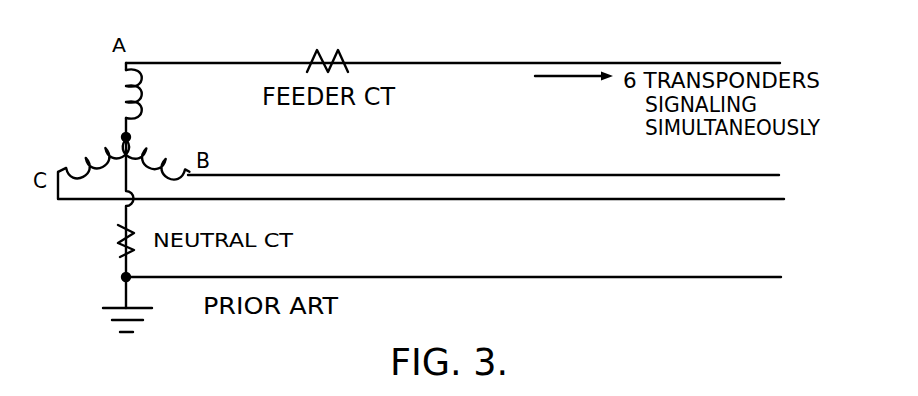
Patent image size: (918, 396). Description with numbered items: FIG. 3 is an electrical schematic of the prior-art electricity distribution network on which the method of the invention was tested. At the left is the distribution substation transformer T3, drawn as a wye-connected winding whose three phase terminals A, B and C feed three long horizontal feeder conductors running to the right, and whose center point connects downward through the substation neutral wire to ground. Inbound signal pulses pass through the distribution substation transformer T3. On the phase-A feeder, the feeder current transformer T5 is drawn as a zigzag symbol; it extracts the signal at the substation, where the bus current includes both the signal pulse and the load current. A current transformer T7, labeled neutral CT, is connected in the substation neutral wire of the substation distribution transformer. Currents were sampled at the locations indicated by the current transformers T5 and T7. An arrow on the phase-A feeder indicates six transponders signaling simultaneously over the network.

The distribution substation transformer T3 is at (102, 143).
The current transformer T5 is at (340, 20).
The current transformer T7 is at (115, 250).